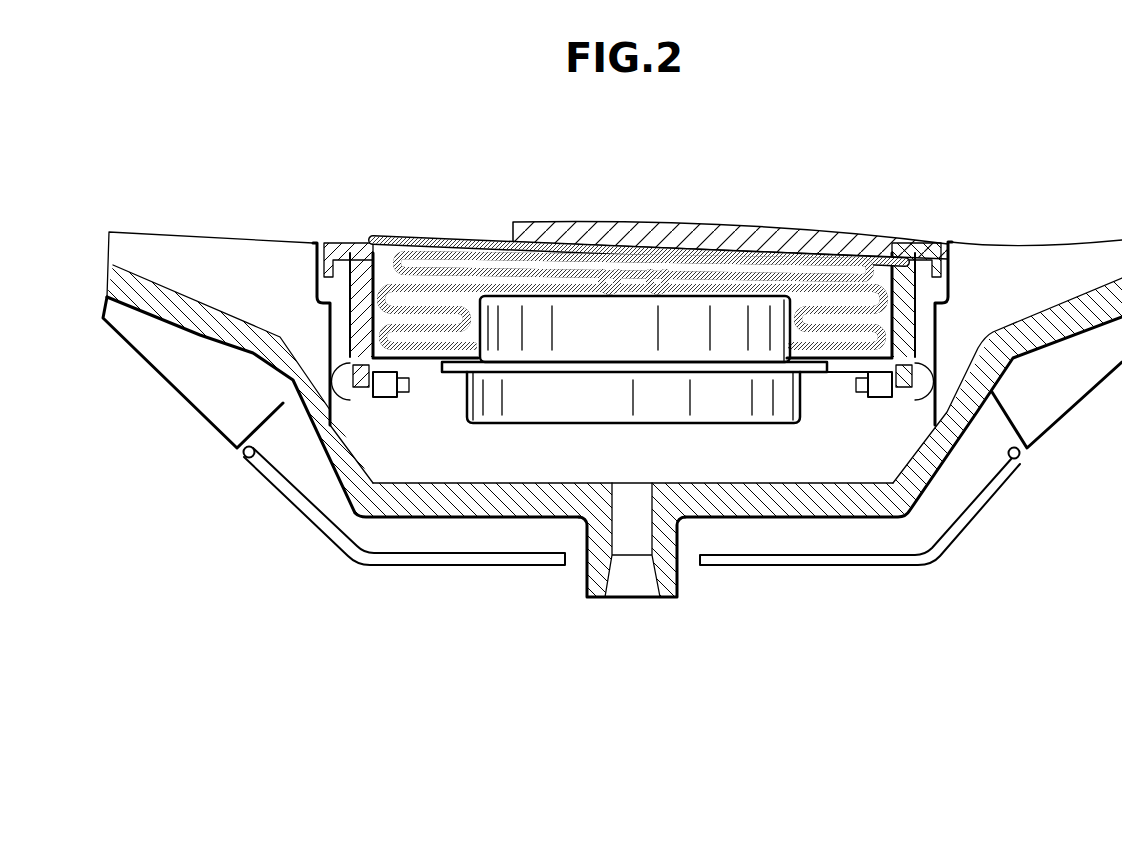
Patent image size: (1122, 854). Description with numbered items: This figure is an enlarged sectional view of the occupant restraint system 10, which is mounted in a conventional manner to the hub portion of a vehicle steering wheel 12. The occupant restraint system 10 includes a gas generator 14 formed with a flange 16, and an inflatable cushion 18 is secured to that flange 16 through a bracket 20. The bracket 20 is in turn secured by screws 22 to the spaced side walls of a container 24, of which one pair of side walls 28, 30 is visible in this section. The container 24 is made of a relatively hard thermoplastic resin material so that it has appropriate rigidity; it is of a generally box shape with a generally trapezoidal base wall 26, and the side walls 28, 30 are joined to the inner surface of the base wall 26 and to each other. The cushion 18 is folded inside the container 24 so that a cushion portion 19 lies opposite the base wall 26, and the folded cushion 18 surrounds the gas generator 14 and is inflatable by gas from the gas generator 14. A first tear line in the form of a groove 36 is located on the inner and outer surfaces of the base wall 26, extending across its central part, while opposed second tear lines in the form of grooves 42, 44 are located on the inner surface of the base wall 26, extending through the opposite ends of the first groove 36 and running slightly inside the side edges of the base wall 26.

The occupant restraint system 10 is at (562, 207).
The vehicle steering wheel 12 is at (170, 307).
The gas generator 14 is at (543, 345).
The flange 16 is at (722, 362).
The inflatable cushion 18 is at (850, 352).
The cushion portion 19 is at (624, 250).
The bracket 20 is at (427, 360).
The screws 22 is at (337, 400).
The container 24 is at (707, 221).
The base wall 26 is at (770, 235).
The side wall 28 is at (320, 292).
The side wall 30 is at (945, 303).
The first tear line in the form of a groove 36 is at (392, 250).
The second tear line in the form of a groove 42 is at (373, 245).
The second tear line in the form of a groove 44 is at (886, 252).